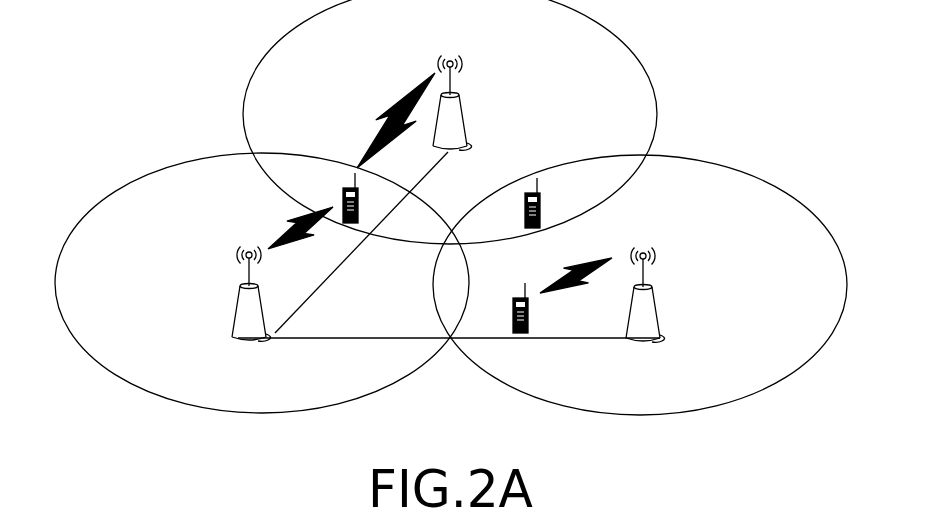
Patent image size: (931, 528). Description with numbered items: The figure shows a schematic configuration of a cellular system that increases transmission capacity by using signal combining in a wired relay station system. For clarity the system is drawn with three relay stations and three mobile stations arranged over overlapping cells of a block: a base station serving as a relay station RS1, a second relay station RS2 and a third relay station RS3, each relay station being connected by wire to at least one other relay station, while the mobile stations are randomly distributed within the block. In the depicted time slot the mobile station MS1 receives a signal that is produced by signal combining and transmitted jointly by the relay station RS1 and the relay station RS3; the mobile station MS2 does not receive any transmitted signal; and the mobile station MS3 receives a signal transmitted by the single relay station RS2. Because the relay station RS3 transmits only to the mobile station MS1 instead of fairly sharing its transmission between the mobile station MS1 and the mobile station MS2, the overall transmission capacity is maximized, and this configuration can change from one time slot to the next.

The relay station RS1 is at (254, 310).
The relay station RS2 is at (645, 310).
The relay station RS3 is at (464, 117).
The mobile station MS1 is at (329, 198).
The mobile station MS2 is at (557, 203).
The mobile station MS3 is at (544, 308).